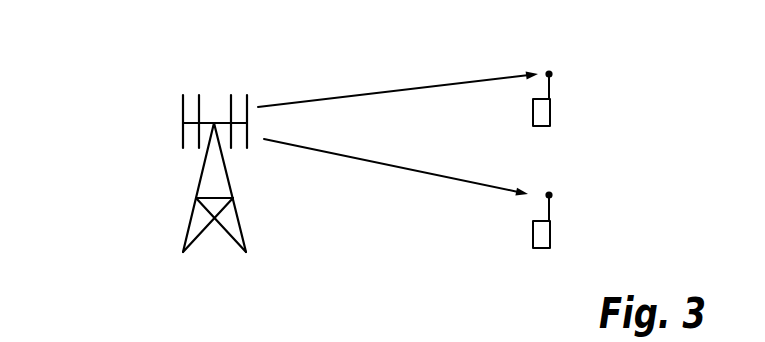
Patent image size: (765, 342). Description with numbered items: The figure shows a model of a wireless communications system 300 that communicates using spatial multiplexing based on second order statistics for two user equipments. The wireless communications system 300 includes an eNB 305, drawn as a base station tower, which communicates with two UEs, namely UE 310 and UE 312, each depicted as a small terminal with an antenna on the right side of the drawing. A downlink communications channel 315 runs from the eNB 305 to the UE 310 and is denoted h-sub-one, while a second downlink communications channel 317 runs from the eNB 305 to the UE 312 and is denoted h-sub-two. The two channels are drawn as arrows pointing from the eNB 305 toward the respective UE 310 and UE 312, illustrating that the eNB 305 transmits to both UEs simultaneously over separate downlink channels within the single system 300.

The wireless communications system 300 is at (77, 26).
The eNB 305 is at (196, 198).
The UE 310 is at (550, 108).
The UE 312 is at (550, 229).
The DL communications channel 315 is at (353, 93).
The DL communications channel 317 is at (367, 160).